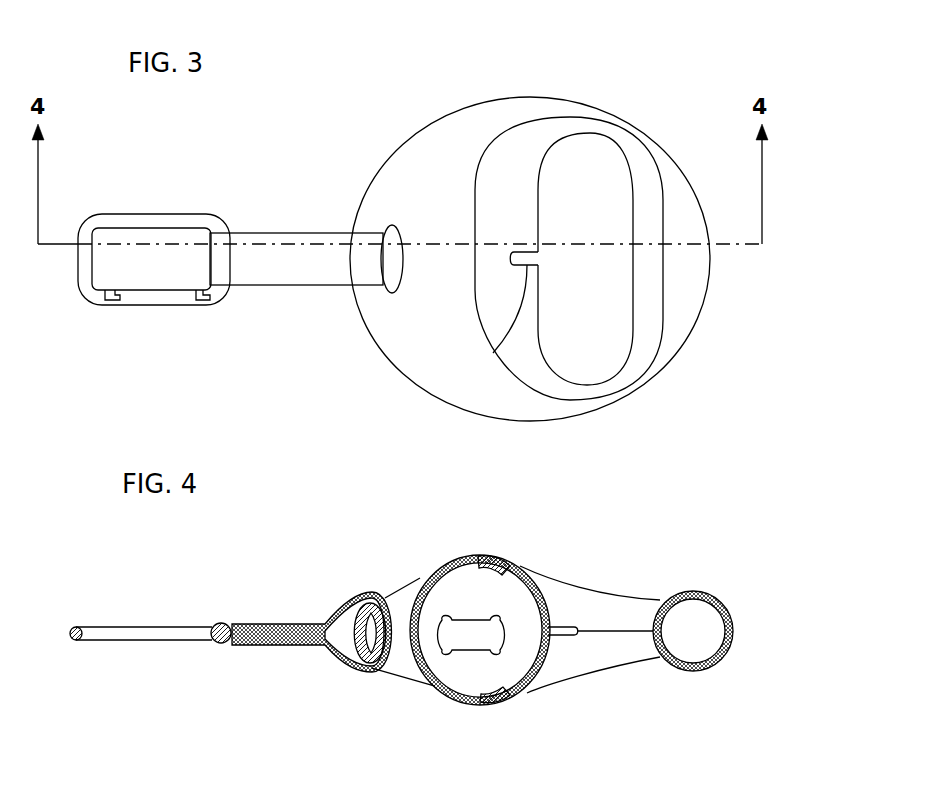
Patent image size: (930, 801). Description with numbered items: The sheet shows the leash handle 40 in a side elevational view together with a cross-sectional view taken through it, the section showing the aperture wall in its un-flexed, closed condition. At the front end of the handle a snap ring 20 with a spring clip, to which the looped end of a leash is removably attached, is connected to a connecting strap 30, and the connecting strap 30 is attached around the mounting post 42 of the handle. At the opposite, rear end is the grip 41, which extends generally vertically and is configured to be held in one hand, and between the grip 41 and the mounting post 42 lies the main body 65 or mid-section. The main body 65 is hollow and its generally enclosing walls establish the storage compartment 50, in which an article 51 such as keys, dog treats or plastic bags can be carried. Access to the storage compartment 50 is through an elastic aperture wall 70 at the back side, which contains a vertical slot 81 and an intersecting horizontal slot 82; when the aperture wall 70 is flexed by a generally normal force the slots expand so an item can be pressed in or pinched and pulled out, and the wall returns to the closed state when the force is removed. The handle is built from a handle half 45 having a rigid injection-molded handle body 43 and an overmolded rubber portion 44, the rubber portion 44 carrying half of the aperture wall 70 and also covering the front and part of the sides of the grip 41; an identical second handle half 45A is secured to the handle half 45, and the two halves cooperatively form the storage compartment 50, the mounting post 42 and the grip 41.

In FIG. 3, the snap ring 20 is at (142, 209).
In FIG. 4, the snap ring 20 is at (135, 621).
In FIG. 3, the connecting strap 30 is at (271, 231).
In FIG. 4, the connecting strap 30 is at (278, 621).
In FIG. 3, the leash handle 40 is at (576, 93).
In FIG. 4, the leash handle 40 is at (582, 588).
In FIG. 3, the grip 41 is at (683, 285).
In FIG. 4, the grip 41 is at (733, 612).
In FIG. 3, the mounting post 42 is at (368, 293).
In FIG. 4, the mounting post 42 is at (337, 653).
In FIG. 3, the handle body 43 is at (442, 163).
In FIG. 4, the handle body 43 is at (417, 660).
In FIG. 3, the rubber portion 44 is at (620, 135).
In FIG. 4, the rubber portion 44 is at (610, 617).
In FIG. 4, the handle half 45 is at (437, 677).
In FIG. 4, the second handle half 45A is at (447, 567).
In FIG. 3, the storage compartment 50 is at (545, 261).
In FIG. 4, the storage compartment 50 is at (486, 668).
In FIG. 4, the article 51 is at (482, 633).
In FIG. 3, the main body 65 is at (447, 297).
In FIG. 4, the main body 65 is at (410, 600).
In FIG. 3, the aperture wall 70 is at (527, 343).
In FIG. 4, the aperture wall 70 is at (547, 673).
In FIG. 4, the vertical slot 81 is at (560, 683).
In FIG. 3, the horizontal slot 82 is at (520, 342).